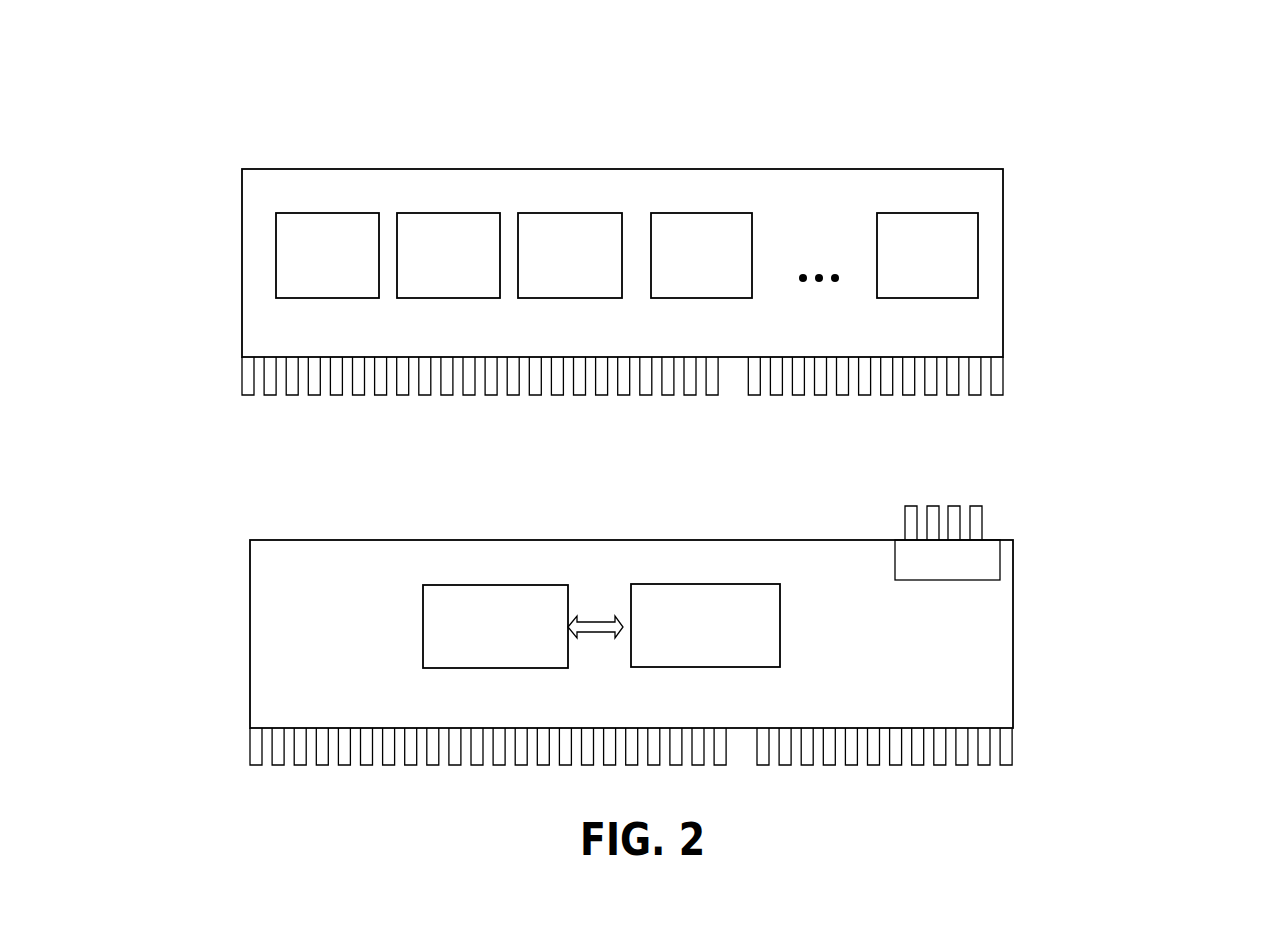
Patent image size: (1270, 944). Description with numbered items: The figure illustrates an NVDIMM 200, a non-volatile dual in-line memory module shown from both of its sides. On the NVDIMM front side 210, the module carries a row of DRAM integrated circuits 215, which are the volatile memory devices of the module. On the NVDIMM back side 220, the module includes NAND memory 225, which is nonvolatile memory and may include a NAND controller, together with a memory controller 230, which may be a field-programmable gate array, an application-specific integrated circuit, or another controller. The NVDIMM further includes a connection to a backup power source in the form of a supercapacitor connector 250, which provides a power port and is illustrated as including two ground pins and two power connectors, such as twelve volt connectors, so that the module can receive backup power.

The NVDIMM 200 is at (188, 98).
The NVDIMM front side 210 is at (342, 150).
The DRAM integrated circuits 215 is at (692, 213).
The NVDIMM back side 220 is at (342, 526).
The NAND memory 225 is at (423, 630).
The memory controller 230 is at (782, 630).
The supercapacitor connector 250 is at (992, 533).